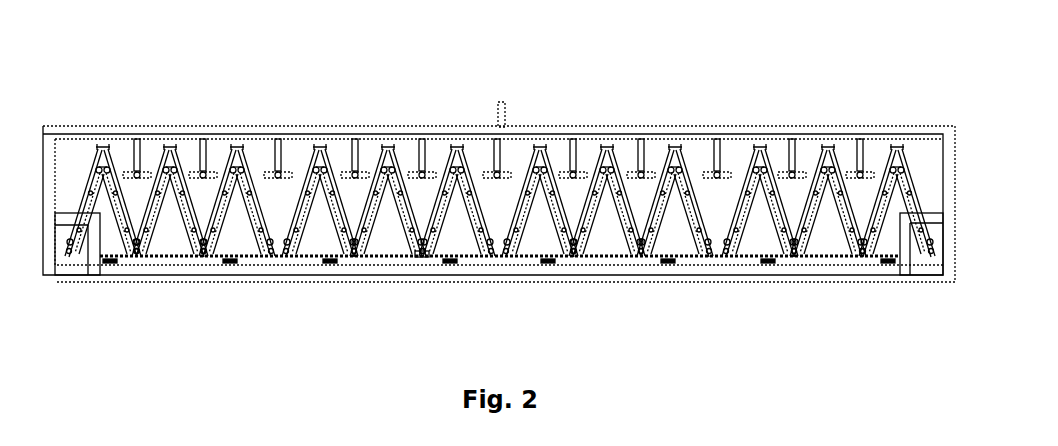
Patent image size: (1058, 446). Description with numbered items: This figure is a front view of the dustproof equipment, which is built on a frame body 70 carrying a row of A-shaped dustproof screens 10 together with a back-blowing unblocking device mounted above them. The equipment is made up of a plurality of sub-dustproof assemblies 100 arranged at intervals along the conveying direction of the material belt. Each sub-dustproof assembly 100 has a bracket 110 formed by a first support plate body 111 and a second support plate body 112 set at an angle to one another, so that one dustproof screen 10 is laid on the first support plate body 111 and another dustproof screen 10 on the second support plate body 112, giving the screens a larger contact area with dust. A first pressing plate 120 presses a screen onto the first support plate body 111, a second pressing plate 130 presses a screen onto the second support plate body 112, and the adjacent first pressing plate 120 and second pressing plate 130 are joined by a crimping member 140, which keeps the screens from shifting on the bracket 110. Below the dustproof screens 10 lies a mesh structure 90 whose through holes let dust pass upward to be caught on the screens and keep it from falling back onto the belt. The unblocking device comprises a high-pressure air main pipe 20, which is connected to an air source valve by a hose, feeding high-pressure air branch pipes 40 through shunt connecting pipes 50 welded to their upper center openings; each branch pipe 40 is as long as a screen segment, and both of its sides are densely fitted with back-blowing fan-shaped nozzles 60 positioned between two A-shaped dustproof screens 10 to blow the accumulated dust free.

The dustproof screen 10 is at (560, 262).
The high-pressure air main pipe 20 is at (500, 125).
The high-pressure air branch pipe 40 is at (572, 165).
The shunt connecting pipe 50 is at (793, 147).
The back-blowing fan-shaped nozzle 60 is at (429, 165).
The frame body 70 is at (141, 137).
The mesh structure 90 is at (472, 258).
The sub-dustproof component 100 is at (220, 160).
The bracket 110 is at (345, 261).
The first support plate body 111 is at (303, 252).
The second support plate body 112 is at (359, 255).
The first pressing plate 120 is at (287, 170).
The second pressing plate 130 is at (352, 165).
The crimping member 140 is at (428, 256).